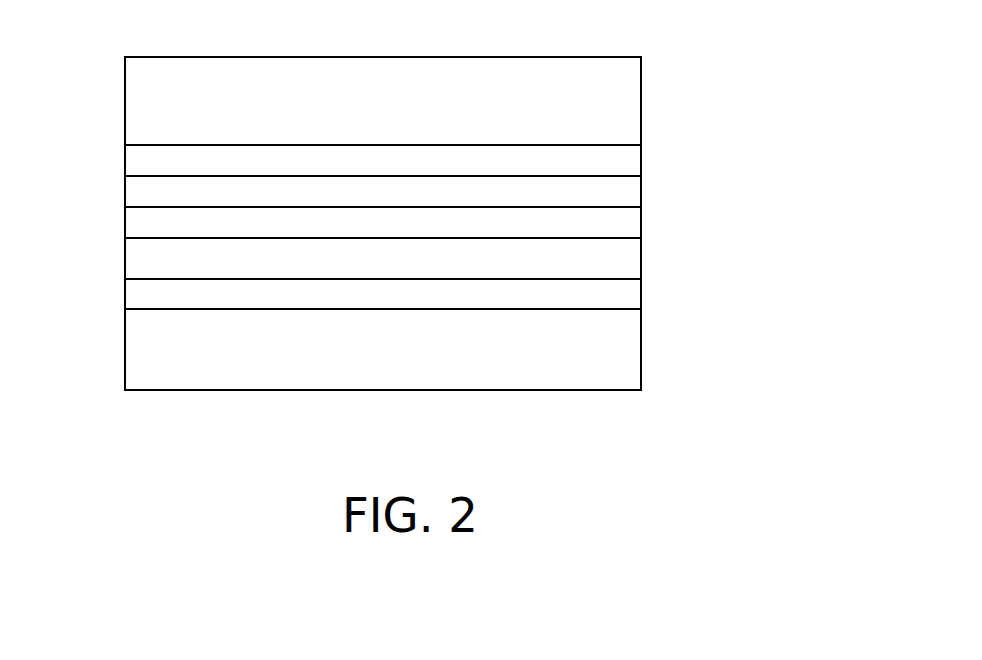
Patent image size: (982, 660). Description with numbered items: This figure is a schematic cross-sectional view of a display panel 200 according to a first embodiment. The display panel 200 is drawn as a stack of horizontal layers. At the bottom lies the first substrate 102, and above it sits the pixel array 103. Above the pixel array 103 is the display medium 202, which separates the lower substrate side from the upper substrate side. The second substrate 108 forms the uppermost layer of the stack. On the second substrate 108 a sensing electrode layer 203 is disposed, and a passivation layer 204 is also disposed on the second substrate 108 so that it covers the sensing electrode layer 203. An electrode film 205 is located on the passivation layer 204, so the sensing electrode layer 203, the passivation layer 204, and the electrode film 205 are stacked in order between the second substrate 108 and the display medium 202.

The display panel 200 is at (772, 441).
The second substrate 108 is at (137, 119).
The sensing electrode layer 203 is at (137, 166).
The passivation layer 204 is at (137, 194).
The electrode film 205 is at (630, 223).
The display medium 202 is at (630, 266).
The pixel array 103 is at (630, 298).
The first substrate 102 is at (630, 342).